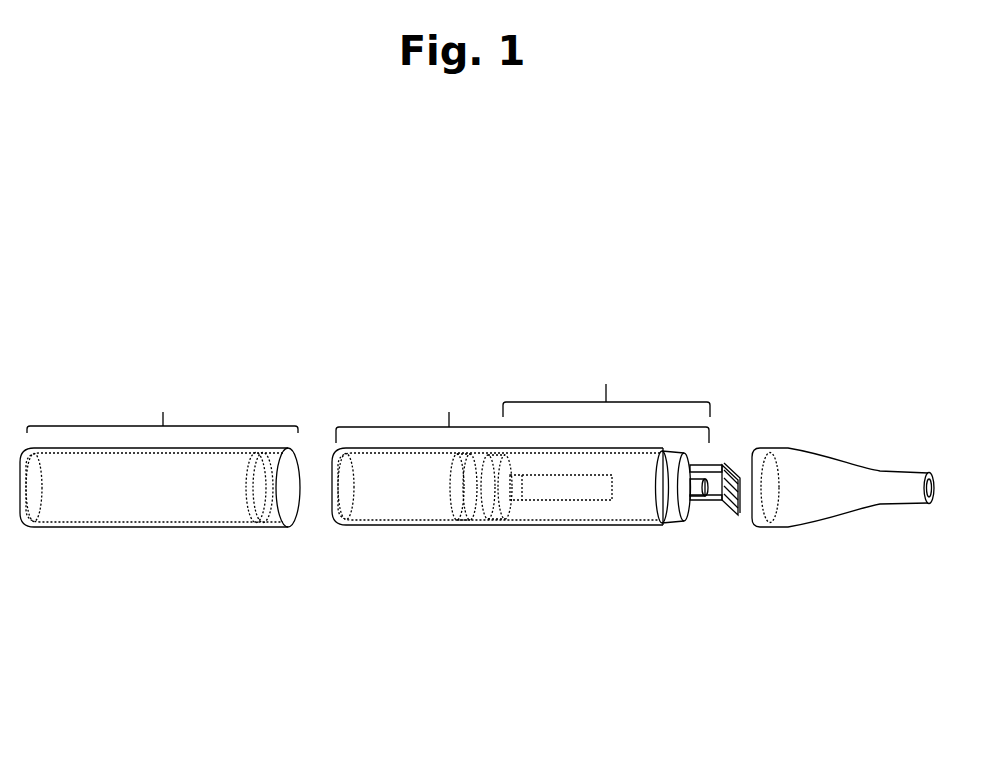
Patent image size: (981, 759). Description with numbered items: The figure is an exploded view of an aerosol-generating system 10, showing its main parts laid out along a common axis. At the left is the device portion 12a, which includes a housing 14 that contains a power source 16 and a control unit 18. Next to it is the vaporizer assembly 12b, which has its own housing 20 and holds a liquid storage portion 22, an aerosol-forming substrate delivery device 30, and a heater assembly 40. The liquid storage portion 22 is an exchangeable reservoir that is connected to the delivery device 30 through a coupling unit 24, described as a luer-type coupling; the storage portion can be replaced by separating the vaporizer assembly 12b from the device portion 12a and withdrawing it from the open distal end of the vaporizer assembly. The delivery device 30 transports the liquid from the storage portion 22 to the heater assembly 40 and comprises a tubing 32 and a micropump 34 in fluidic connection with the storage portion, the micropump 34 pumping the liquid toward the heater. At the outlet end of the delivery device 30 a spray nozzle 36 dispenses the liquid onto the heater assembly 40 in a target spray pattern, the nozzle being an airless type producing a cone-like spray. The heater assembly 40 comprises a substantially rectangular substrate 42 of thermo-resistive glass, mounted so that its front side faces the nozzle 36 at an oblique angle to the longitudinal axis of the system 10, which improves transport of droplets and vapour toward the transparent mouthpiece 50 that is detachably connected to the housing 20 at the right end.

The aerosol-generating system 10 is at (262, 374).
The device portion 12a is at (162, 404).
The vaporizer assembly 12b is at (522, 412).
The housing 14 is at (138, 526).
The power source 16 is at (75, 511).
The control unit 18 is at (262, 498).
The housing 20 is at (408, 526).
The liquid storage portion 22 is at (375, 508).
The coupling unit 24 is at (477, 500).
The delivery device 30 is at (595, 438).
The tubing 32 is at (546, 497).
The micropump 34 is at (640, 497).
The spray nozzle 36 is at (696, 500).
The heater assembly 40 is at (736, 512).
The substrate 42 is at (708, 500).
The mouthpiece 50 is at (843, 500).